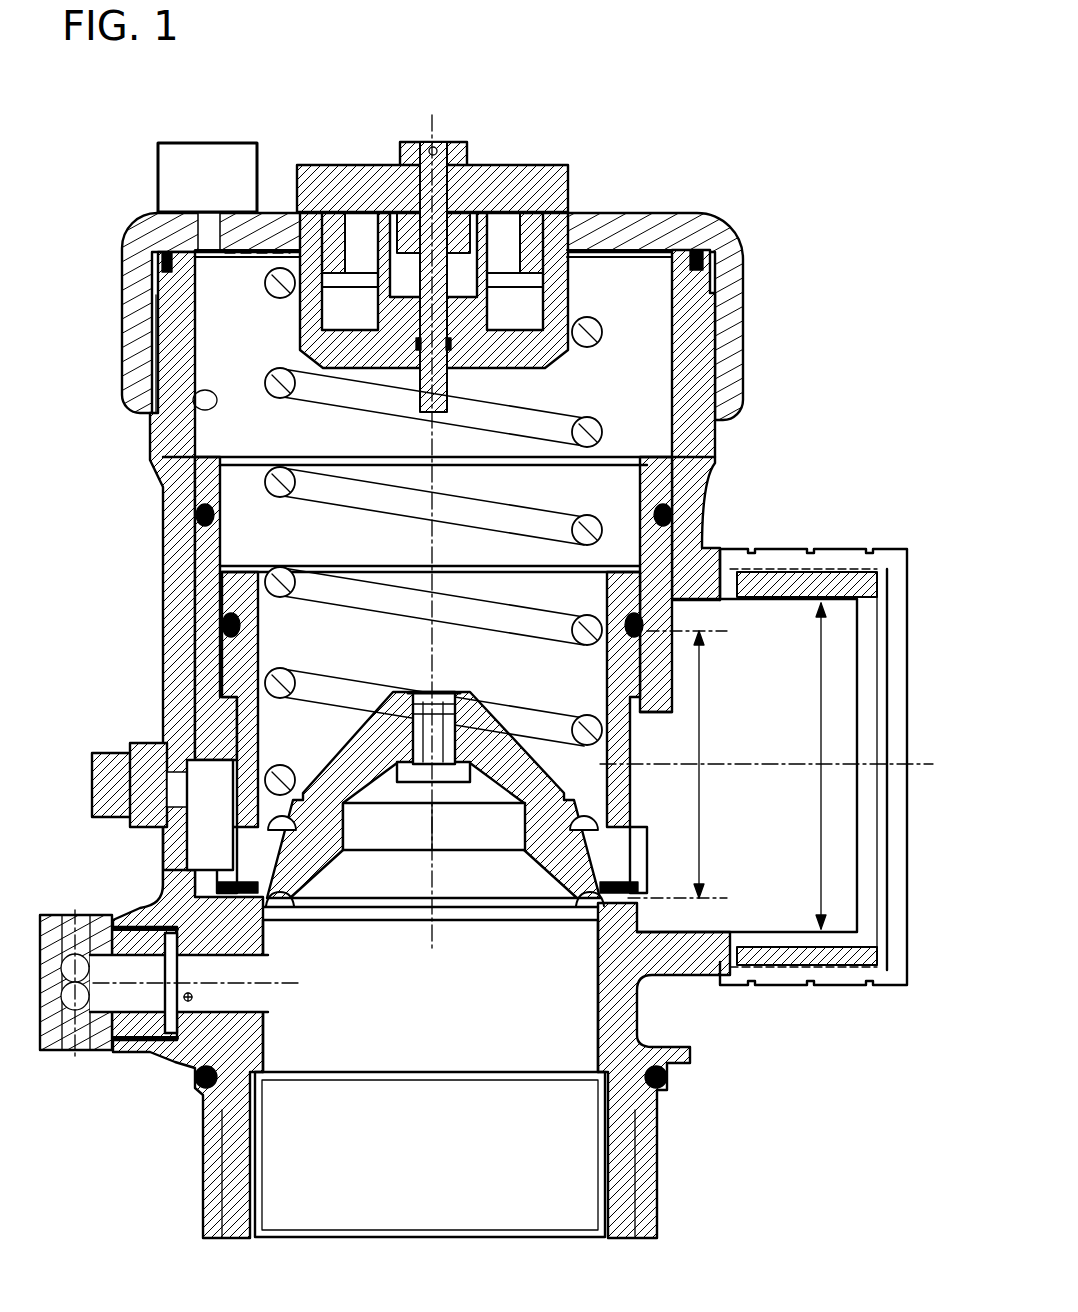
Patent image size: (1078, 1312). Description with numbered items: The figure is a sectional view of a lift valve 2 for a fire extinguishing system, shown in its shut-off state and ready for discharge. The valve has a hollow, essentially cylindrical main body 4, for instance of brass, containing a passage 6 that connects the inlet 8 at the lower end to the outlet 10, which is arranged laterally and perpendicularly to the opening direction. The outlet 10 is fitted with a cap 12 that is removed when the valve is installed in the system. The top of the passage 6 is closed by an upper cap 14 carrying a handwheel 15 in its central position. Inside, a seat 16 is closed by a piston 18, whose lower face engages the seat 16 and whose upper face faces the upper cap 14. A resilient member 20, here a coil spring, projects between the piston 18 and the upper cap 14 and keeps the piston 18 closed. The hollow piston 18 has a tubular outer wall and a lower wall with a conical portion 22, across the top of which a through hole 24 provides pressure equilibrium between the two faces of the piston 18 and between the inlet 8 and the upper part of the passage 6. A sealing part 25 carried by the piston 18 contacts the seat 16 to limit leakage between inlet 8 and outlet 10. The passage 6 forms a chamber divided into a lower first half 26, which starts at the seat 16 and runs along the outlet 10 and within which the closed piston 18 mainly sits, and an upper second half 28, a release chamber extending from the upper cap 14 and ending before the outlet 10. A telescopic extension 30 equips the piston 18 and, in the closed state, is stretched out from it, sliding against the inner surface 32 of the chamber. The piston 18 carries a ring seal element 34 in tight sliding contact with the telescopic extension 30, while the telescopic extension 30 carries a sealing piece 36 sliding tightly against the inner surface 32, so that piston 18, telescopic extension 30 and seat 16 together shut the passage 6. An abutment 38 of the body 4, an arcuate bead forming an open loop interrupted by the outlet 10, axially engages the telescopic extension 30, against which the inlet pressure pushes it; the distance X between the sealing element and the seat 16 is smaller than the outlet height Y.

The valve 2 is at (845, 162).
The main body 4 is at (185, 568).
The passage 6 is at (563, 690).
The inlet 8 is at (446, 1043).
The outlet 10 is at (775, 882).
The cap 12 is at (840, 988).
The upper cap 14 is at (653, 232).
The handwheel 15 is at (512, 170).
The seat 16 is at (283, 897).
The piston 18 is at (553, 862).
The resilient member 20 is at (283, 376).
The conical portion 22 is at (348, 768).
The through hole 24 is at (440, 767).
The sealing part 25 is at (590, 905).
The first half 26 is at (345, 662).
The second half 28 is at (635, 392).
The telescopic extension 30 is at (210, 545).
The inner surface 32 is at (208, 400).
The seal element 34 is at (228, 628).
The sealing piece 36 is at (670, 513).
The abutment 38 is at (198, 730).